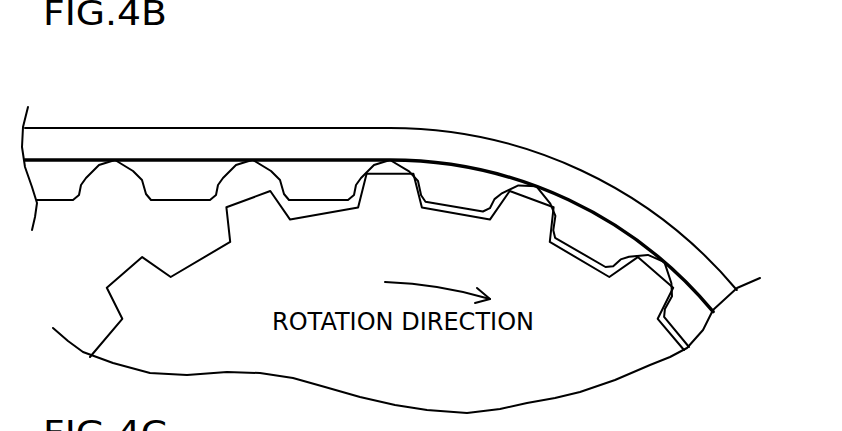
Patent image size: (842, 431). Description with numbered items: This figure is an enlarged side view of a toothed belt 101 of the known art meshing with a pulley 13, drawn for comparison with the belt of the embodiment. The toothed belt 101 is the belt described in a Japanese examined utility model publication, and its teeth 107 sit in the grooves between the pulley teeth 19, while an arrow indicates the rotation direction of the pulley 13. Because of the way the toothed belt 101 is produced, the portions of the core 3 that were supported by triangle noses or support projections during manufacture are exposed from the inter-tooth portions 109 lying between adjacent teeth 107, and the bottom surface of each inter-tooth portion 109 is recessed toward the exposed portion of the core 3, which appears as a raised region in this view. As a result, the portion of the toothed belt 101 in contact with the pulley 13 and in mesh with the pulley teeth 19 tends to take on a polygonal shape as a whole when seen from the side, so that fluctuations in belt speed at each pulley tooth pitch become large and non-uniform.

The core 3 is at (379, 199).
The toothed belt 101 is at (379, 181).
The belt tooth 107 is at (363, 231).
The inter-tooth portion 109 is at (95, 222).
The pulley 13 is at (406, 215).
The pulley tooth 19 is at (409, 265).